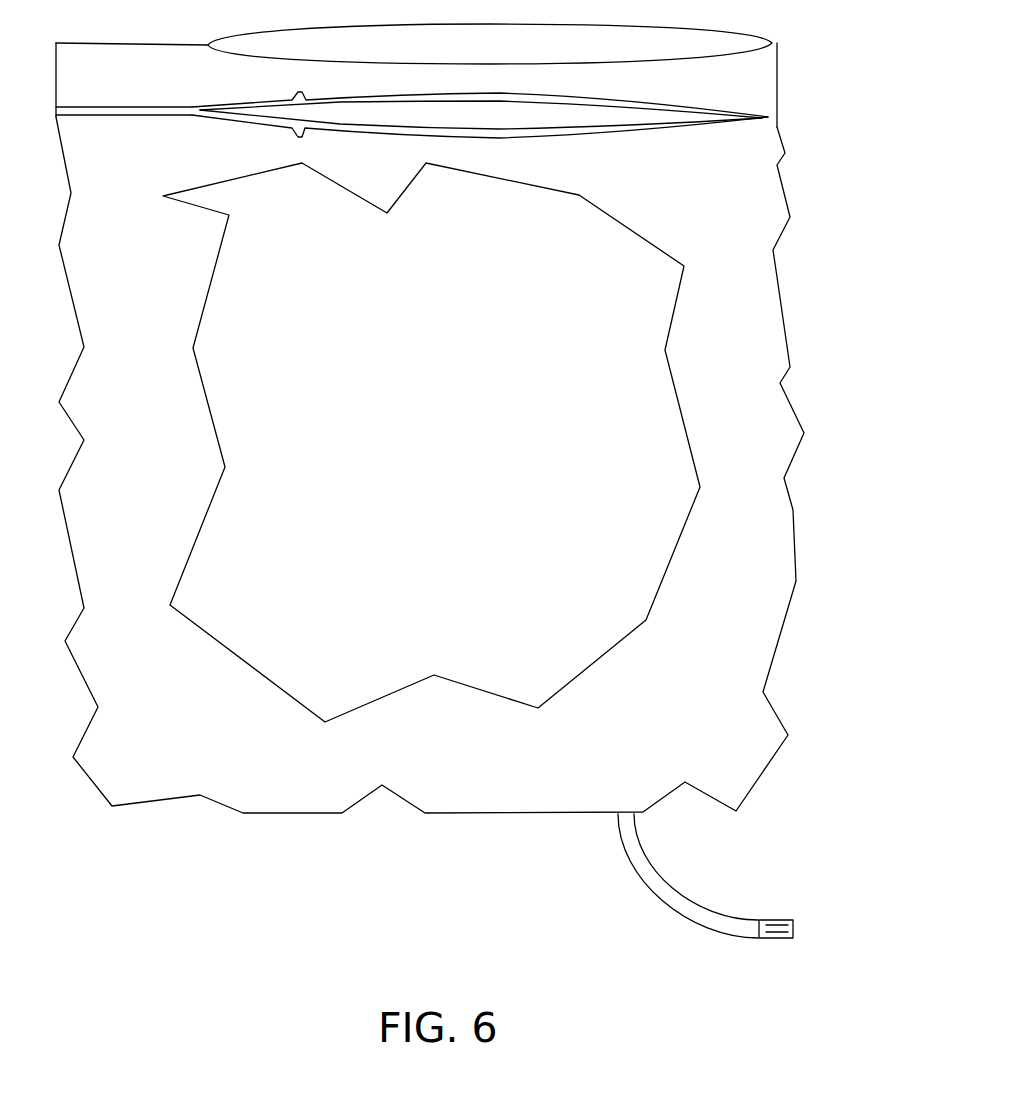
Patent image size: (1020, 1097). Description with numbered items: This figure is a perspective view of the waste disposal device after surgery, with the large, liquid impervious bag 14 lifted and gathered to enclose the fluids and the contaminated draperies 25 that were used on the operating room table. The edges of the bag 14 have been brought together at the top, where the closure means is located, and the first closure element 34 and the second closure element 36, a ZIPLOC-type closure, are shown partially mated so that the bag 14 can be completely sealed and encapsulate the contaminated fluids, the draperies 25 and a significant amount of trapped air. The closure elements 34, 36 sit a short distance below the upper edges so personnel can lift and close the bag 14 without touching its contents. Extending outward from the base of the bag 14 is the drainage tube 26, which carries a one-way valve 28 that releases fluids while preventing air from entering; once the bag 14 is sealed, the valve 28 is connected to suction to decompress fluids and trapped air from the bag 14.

The bag 14 is at (777, 277).
The draperies 25 is at (653, 513).
The drainage tube 26 is at (691, 897).
The one-way valve 28 is at (795, 929).
The first closure element 34 is at (738, 133).
The second closure element 36 is at (742, 107).